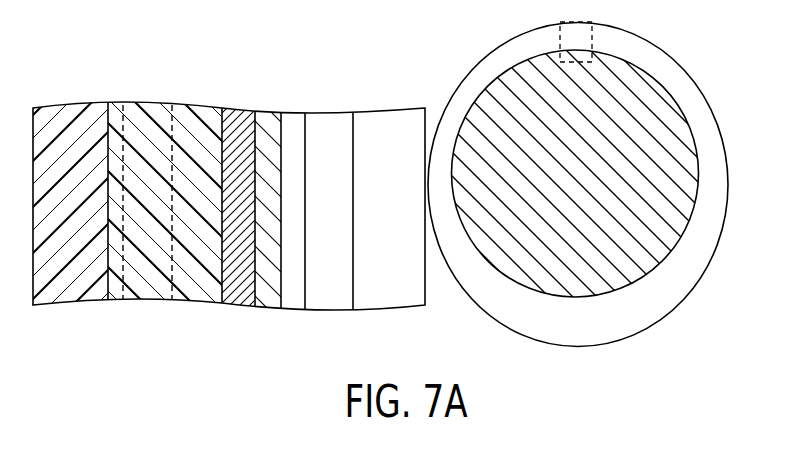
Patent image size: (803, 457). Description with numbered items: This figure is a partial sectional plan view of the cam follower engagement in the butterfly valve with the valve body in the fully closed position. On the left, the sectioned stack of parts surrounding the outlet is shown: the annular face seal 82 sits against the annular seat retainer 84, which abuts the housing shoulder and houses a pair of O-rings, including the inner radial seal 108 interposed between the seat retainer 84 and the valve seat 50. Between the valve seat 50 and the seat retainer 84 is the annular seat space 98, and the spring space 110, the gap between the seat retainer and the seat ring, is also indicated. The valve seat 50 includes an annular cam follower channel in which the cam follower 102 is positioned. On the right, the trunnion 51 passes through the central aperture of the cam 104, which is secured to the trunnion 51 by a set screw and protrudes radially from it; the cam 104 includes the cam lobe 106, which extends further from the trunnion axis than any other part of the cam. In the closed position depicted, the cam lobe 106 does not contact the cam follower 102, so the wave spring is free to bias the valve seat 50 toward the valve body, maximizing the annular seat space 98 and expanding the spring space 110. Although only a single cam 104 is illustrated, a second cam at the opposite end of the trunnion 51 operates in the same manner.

The annular face seal 82 is at (76, 110).
The spring space 110 is at (151, 108).
The annular seat retainer 84 is at (199, 110).
The inner radial seal 108 is at (241, 110).
The annular seat space 98 is at (297, 120).
The valve seat 50 is at (331, 126).
The cam follower 102 is at (383, 126).
The trunnion 51 is at (671, 114).
The cam 104 is at (711, 145).
The cam lobe 106 is at (612, 328).